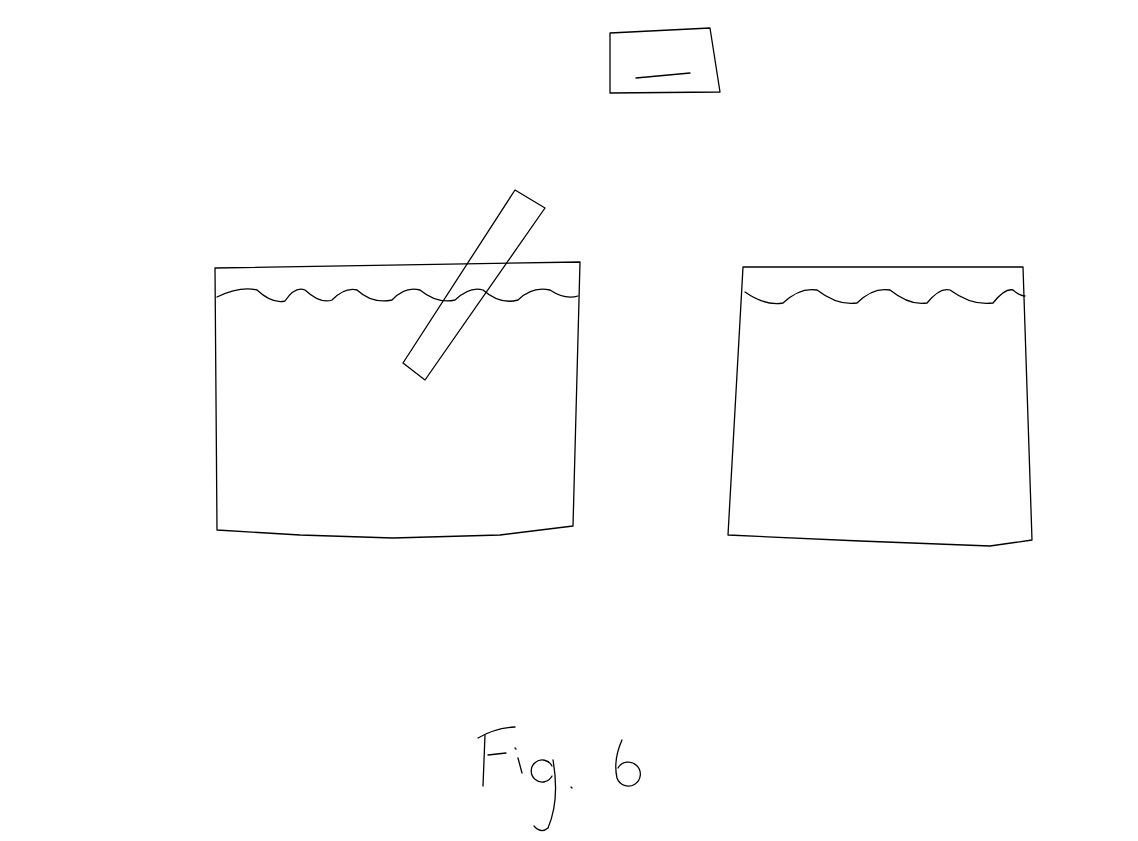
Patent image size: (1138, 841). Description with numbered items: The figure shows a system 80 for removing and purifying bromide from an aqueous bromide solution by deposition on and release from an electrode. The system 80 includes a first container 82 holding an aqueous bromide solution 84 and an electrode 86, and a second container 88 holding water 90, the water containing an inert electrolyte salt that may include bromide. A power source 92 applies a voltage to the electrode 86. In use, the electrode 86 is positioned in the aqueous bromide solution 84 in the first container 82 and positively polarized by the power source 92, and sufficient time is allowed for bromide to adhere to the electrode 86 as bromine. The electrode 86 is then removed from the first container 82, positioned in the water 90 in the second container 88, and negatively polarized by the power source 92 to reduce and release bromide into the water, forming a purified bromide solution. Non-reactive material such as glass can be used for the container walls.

The system 80 is at (1055, 73).
The first container 82 is at (217, 413).
The aqueous bromide solution 84 is at (248, 355).
The electrode 86 is at (502, 227).
The second container 88 is at (1028, 348).
The water 90 is at (975, 437).
The power source 92 is at (530, 185).